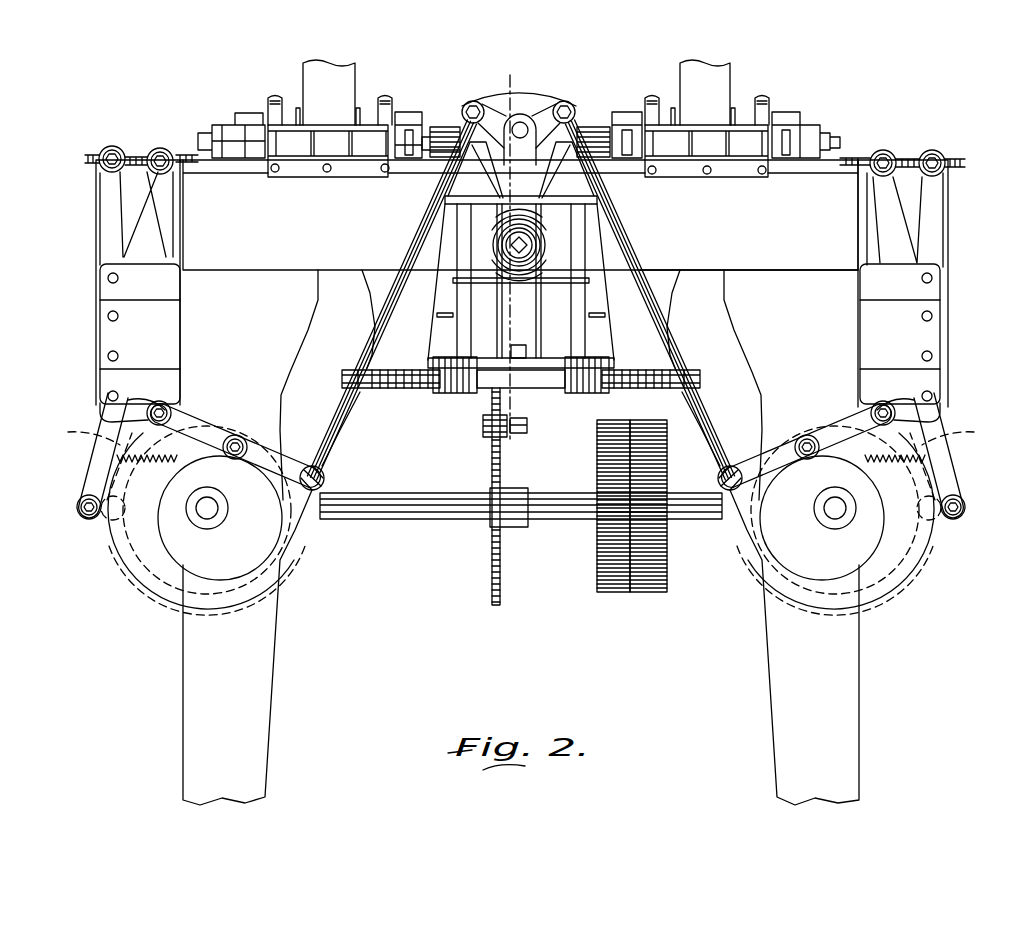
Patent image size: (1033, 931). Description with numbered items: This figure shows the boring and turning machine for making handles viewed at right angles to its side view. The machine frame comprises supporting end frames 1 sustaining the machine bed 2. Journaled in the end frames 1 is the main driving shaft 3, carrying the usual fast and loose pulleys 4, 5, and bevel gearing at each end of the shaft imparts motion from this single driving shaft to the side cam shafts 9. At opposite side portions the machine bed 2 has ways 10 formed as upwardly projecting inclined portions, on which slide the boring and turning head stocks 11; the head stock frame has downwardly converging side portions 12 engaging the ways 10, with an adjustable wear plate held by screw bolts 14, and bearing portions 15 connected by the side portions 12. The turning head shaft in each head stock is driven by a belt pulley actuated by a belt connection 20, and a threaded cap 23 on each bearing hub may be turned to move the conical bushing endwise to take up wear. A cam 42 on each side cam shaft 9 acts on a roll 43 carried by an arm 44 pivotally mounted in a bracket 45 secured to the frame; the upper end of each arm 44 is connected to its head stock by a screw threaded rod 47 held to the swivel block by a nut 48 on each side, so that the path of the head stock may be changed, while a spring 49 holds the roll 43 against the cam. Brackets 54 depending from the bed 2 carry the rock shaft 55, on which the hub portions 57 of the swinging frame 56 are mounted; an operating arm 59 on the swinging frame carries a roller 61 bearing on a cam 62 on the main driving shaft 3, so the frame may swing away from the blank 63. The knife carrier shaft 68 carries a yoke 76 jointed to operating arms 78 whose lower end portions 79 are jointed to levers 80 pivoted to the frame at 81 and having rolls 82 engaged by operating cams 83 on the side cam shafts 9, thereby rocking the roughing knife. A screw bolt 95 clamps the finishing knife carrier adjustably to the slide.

The supporting end frame 1 is at (310, 302).
The machine bed 2 is at (821, 265).
The main driving shaft 3 is at (493, 73).
The fast pulley 4 is at (613, 590).
The loose pulley 5 is at (647, 588).
The side cam shaft 9 is at (206, 510).
The ways 10 is at (256, 174).
The head stock 11 is at (524, 97).
The side portion 12 is at (310, 174).
The screw bolt 14 is at (382, 172).
The bearing portion 15 is at (388, 96).
The belt connection 20 is at (318, 70).
The cap 23 is at (243, 112).
The cam 42 is at (113, 553).
The roll 43 is at (82, 518).
The arm 44 is at (98, 232).
The bracket 45 is at (105, 325).
The rod 47 is at (136, 153).
The nut 48 is at (110, 146).
The spring 49 is at (100, 433).
The bracket 54 is at (373, 317).
The rock shaft 55 is at (497, 381).
The swinging frame 56 is at (562, 348).
The hub portion 57 is at (445, 393).
The operating arm 59 is at (527, 430).
The roller 61 is at (484, 431).
The cam 62 is at (496, 605).
The blank 63 is at (592, 127).
The knife carrier shaft 68 is at (521, 124).
The yoke 76 is at (545, 109).
The operating arm 78 is at (420, 232).
The lower end portion 79 is at (324, 478).
The lever 80 is at (203, 415).
The pivot 81 is at (120, 410).
The roll 82 is at (240, 432).
The operating cam 83 is at (202, 568).
The screw bolt 95 is at (536, 243).